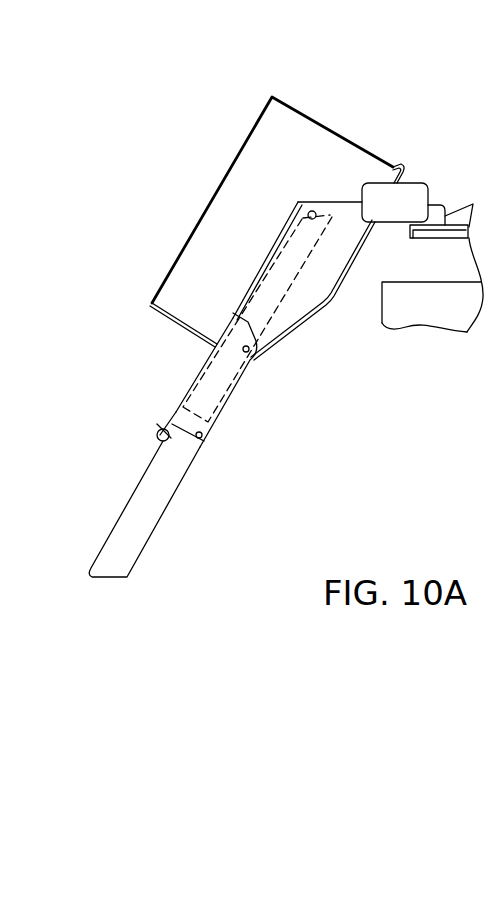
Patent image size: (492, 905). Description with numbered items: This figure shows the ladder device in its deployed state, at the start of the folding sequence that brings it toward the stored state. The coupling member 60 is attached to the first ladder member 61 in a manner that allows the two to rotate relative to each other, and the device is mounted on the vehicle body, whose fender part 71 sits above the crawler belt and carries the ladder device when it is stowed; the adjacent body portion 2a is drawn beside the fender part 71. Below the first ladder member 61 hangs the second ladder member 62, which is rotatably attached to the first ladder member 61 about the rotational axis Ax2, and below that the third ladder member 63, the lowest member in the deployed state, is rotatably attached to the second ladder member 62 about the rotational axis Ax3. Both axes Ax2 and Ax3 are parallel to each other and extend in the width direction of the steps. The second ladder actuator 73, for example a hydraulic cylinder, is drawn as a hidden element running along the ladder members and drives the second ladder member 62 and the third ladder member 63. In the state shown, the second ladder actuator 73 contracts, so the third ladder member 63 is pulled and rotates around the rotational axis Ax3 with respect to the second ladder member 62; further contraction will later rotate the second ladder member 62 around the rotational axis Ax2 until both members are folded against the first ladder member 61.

The first ladder member 61 is at (335, 210).
The coupling member 60 is at (410, 183).
The fender part 71 is at (443, 238).
The frame part 2a is at (407, 310).
The second ladder actuator 73 is at (290, 236).
The second ladder member 62 is at (222, 390).
The third ladder member 63 is at (147, 510).
The rotational axis of the second ladder member Ax2 is at (252, 350).
The rotational axis of the third ladder member Ax3 is at (203, 435).